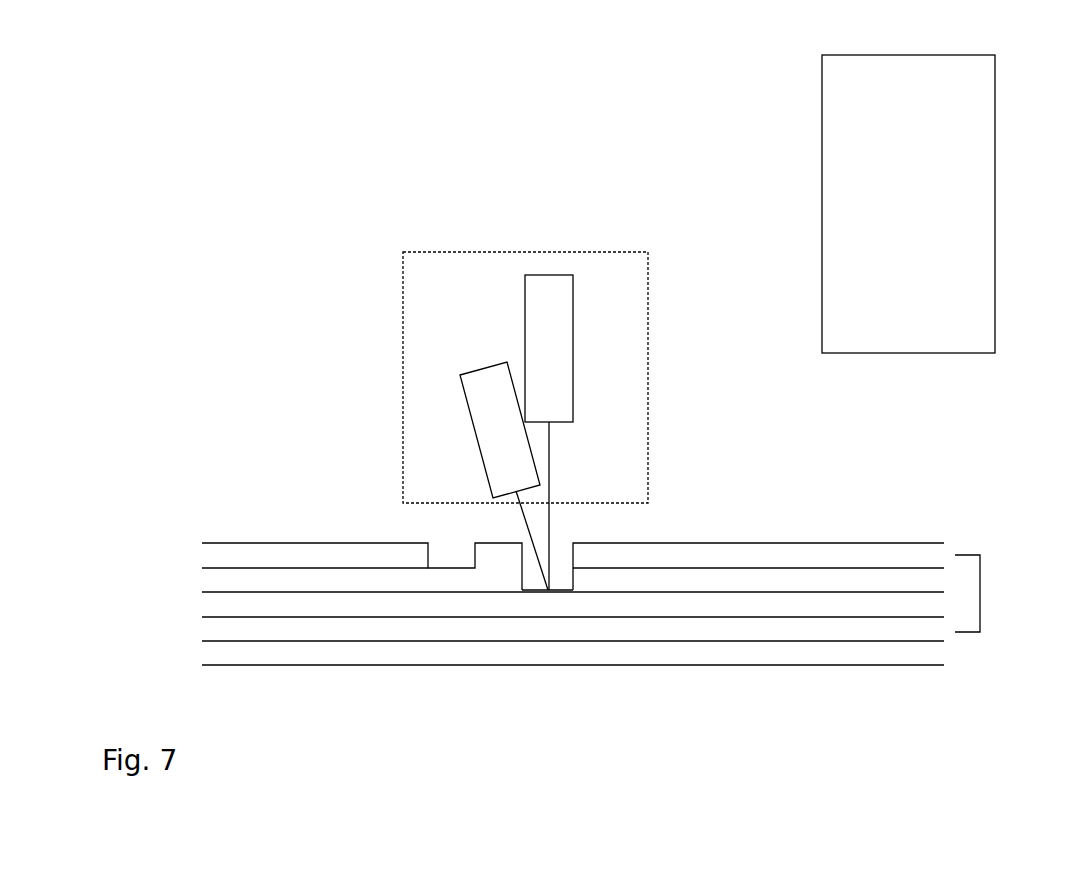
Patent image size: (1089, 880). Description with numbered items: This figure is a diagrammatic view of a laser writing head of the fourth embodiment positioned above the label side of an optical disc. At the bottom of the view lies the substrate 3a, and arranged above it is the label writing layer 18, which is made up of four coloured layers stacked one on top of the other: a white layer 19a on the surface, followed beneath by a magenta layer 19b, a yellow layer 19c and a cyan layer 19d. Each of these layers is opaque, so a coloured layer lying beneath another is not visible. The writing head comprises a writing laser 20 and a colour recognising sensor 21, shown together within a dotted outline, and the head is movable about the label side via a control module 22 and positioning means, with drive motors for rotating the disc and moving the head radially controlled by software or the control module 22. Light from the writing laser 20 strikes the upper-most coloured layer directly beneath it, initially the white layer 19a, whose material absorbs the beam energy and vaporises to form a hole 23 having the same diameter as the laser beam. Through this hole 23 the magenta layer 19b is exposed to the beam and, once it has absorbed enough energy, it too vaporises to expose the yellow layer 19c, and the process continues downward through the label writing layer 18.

The label writing layer 18 is at (980, 605).
The white layer 19a is at (232, 552).
The magenta layer 19b is at (232, 580).
The yellow layer 19c is at (226, 605).
The cyan layer 19d is at (218, 632).
The writing laser 20 is at (565, 285).
The colour recognising sensor 21 is at (473, 385).
The control module 22 is at (977, 222).
The hole 23 is at (450, 553).
The substrate 3a is at (938, 657).